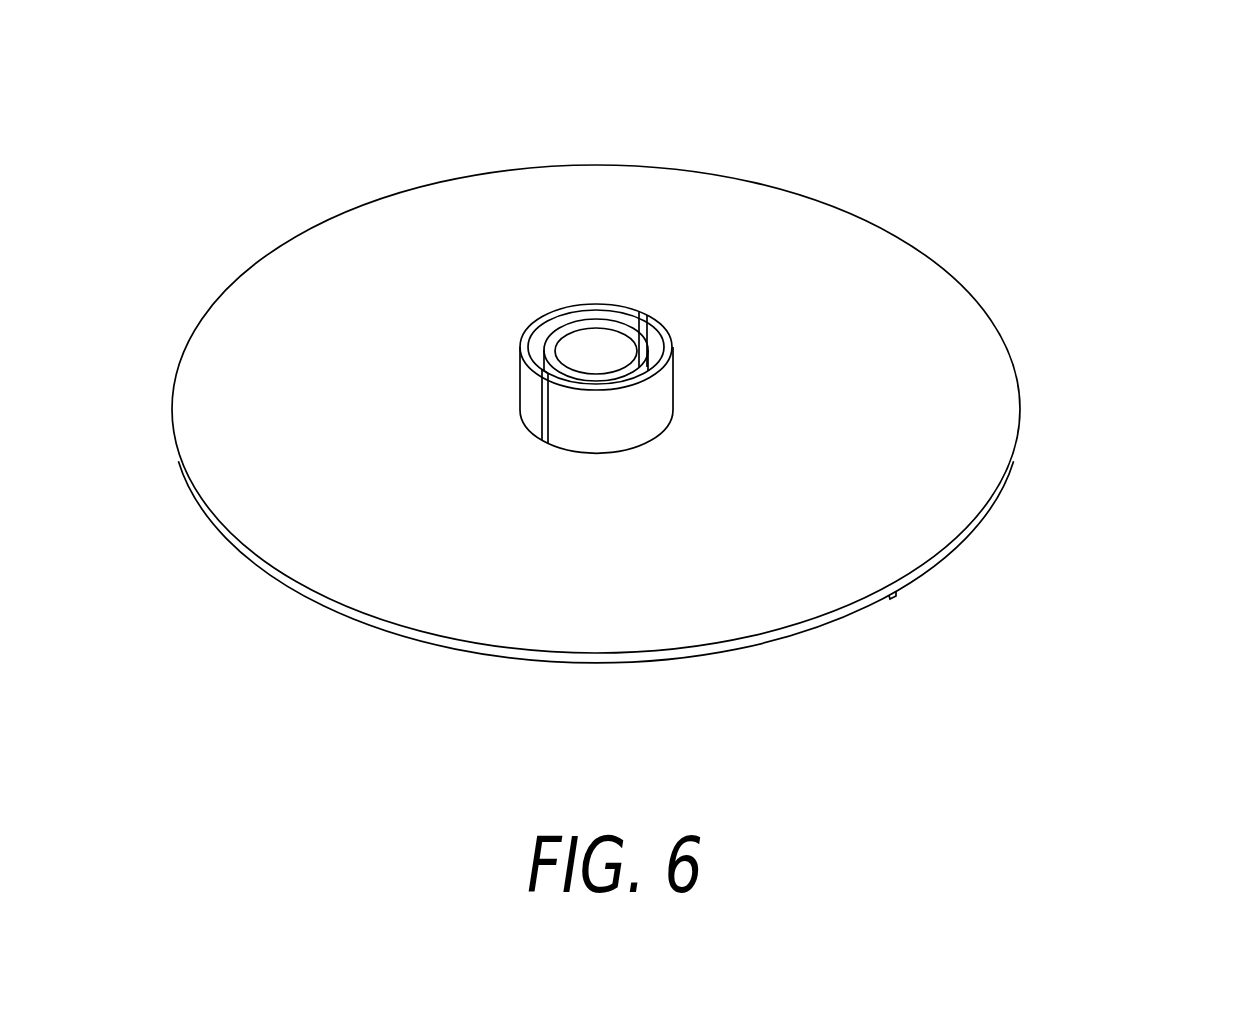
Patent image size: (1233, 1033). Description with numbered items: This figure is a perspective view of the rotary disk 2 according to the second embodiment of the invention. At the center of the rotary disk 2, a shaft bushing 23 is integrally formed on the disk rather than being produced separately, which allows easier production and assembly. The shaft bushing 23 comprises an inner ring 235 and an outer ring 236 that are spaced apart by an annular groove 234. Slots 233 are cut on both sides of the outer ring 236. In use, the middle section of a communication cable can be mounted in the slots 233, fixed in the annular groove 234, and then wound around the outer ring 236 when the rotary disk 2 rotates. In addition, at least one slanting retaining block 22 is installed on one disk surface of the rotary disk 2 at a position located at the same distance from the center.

The rotary disk 2 is at (985, 368).
The slanting retaining block 22 is at (893, 600).
The shaft bushing 23 is at (577, 303).
The slots 233 is at (646, 320).
The annular groove 234 is at (540, 357).
The inner ring 235 is at (567, 323).
The outer ring 236 is at (523, 340).